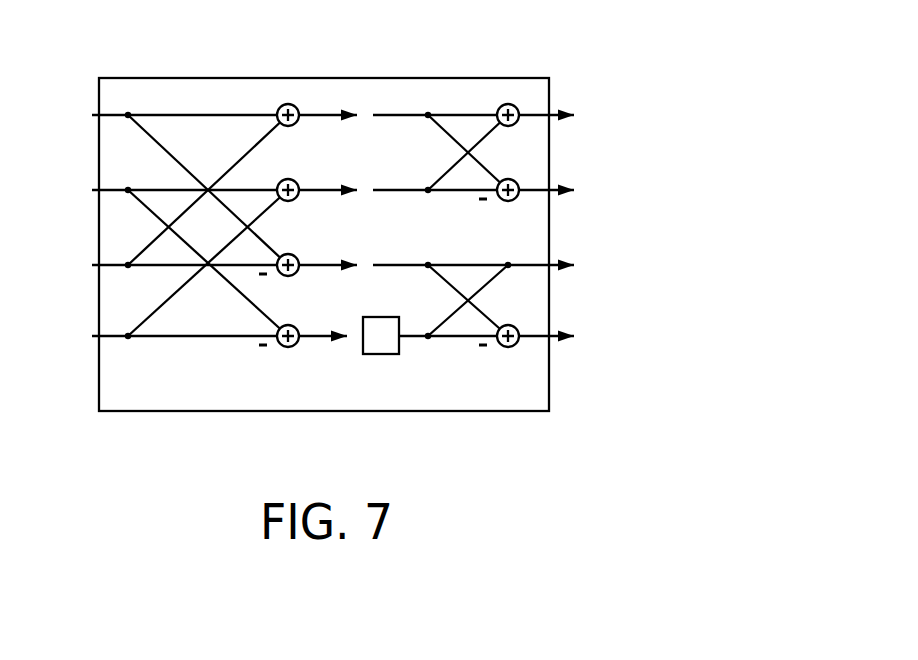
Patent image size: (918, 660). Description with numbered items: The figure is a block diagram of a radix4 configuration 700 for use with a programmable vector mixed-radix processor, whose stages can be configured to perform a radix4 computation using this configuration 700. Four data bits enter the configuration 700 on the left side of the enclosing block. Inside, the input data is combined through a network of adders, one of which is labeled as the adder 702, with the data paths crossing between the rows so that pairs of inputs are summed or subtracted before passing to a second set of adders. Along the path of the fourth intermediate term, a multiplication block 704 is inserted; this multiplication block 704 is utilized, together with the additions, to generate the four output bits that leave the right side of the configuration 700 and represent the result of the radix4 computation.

The radix4 configuration 700 is at (343, 221).
The adder 702 is at (297, 122).
The multiplication block 704 is at (383, 354).